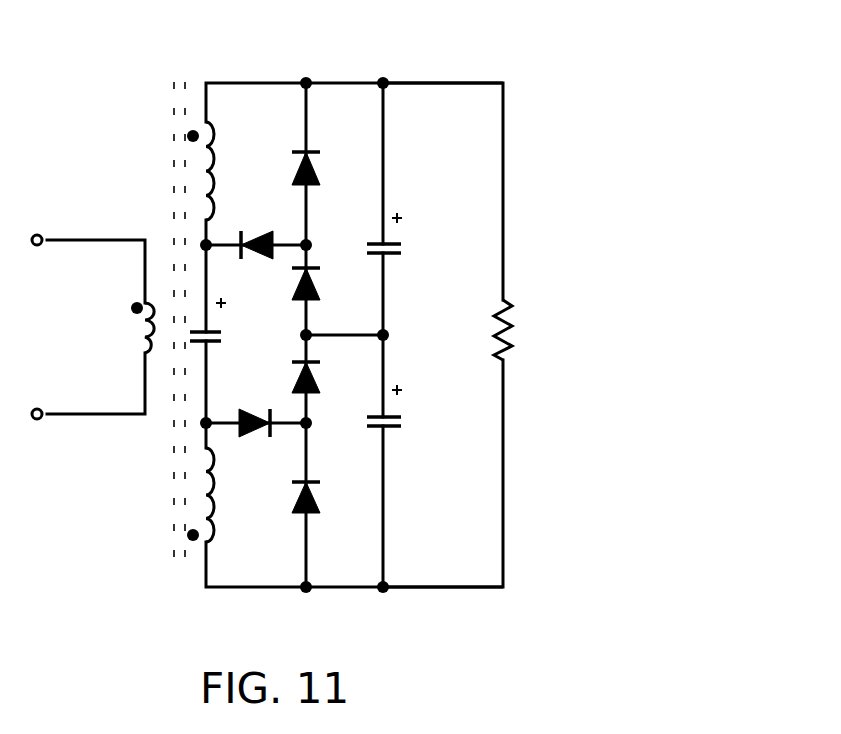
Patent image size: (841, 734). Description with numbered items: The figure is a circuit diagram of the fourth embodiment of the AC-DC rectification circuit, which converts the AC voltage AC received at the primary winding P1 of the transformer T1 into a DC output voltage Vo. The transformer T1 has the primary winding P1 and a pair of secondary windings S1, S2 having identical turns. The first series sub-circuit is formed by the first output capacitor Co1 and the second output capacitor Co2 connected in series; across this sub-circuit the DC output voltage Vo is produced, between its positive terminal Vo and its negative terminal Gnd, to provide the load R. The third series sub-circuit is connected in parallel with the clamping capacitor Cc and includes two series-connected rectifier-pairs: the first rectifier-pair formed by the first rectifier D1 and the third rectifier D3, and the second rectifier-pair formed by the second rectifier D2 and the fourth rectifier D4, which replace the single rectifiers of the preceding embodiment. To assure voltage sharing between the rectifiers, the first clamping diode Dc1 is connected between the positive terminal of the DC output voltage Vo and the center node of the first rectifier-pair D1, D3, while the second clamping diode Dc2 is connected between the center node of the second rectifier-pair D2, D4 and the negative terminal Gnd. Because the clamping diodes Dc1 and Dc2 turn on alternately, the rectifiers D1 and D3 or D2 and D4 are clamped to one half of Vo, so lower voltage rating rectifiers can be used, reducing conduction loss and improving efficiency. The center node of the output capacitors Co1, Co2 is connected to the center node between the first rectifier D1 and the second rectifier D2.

The transformer T1 is at (183, 308).
The primary winding P1 is at (126, 327).
The secondary winding S1 is at (221, 171).
The secondary winding S2 is at (220, 495).
The clamping capacitor Cc is at (222, 325).
The first rectifier D1 is at (328, 284).
The second rectifier D2 is at (328, 377).
The third rectifier D3 is at (255, 229).
The fourth rectifier D4 is at (255, 441).
The first clamping diode Dc1 is at (335, 168).
The second clamping diode Dc2 is at (335, 497).
The first output capacitor Co1 is at (414, 238).
The second output capacitor Co2 is at (414, 413).
The load R is at (521, 330).
The AC voltage AC is at (33, 327).
The DC output voltage Vo is at (457, 63).
The ground terminal Gnd is at (457, 606).